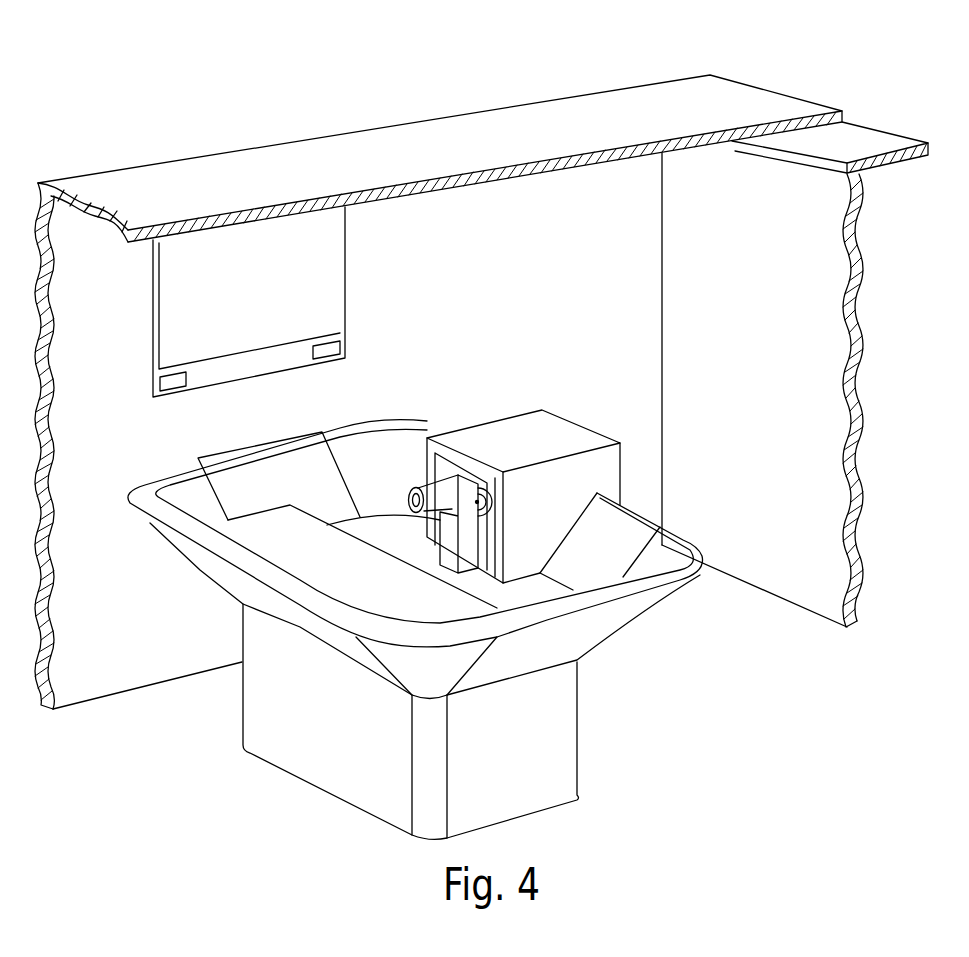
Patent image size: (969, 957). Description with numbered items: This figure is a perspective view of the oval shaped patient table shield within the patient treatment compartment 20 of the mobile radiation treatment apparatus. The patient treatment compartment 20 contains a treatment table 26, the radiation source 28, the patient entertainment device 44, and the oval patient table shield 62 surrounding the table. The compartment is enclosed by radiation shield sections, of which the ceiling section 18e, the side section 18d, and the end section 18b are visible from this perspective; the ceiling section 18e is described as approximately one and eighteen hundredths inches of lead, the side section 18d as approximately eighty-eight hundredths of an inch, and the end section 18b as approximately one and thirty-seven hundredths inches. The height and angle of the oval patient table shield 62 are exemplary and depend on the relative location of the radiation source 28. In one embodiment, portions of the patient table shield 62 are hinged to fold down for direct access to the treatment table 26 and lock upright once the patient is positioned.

The patient treatment compartment 20 is at (770, 70).
The radiation shield section 18e is at (470, 157).
The radiation shield section 18d is at (513, 304).
The radiation shield section 18b is at (778, 346).
The patient entertainment device 44 is at (267, 296).
The treatment table 26 is at (347, 576).
The radiation source 28 is at (418, 487).
The oval patient table shield 62 is at (590, 636).